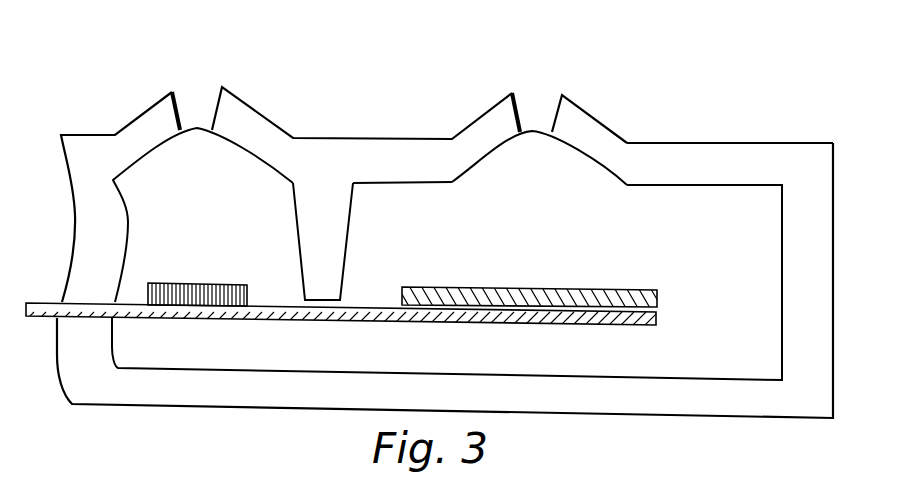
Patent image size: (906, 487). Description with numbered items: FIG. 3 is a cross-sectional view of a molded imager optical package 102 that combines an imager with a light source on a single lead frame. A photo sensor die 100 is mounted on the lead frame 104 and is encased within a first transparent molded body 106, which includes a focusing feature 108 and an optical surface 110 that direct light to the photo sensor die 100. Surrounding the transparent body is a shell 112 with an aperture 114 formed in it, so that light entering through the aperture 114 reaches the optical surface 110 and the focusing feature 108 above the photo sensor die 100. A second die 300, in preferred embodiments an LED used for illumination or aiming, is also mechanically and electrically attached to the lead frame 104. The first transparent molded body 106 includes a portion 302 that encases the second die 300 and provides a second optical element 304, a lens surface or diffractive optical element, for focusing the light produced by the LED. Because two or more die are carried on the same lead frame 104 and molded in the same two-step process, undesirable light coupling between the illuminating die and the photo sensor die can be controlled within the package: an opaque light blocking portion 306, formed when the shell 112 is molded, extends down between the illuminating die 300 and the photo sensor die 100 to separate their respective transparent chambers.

The photo sensor die 100 is at (657, 296).
The housing body 102 is at (722, 138).
The lead frame 104 is at (370, 308).
The first transparent molded body 106 is at (550, 244).
The focusing feature 108 is at (550, 178).
The optical surface 110 is at (535, 131).
The shell 112 is at (703, 175).
The aperture 114 is at (553, 113).
The second die 300 is at (226, 283).
The portion of the first transparent molded body 302 is at (214, 202).
The second optical element 304 is at (197, 127).
The opaque light blocking portion 306 is at (322, 238).